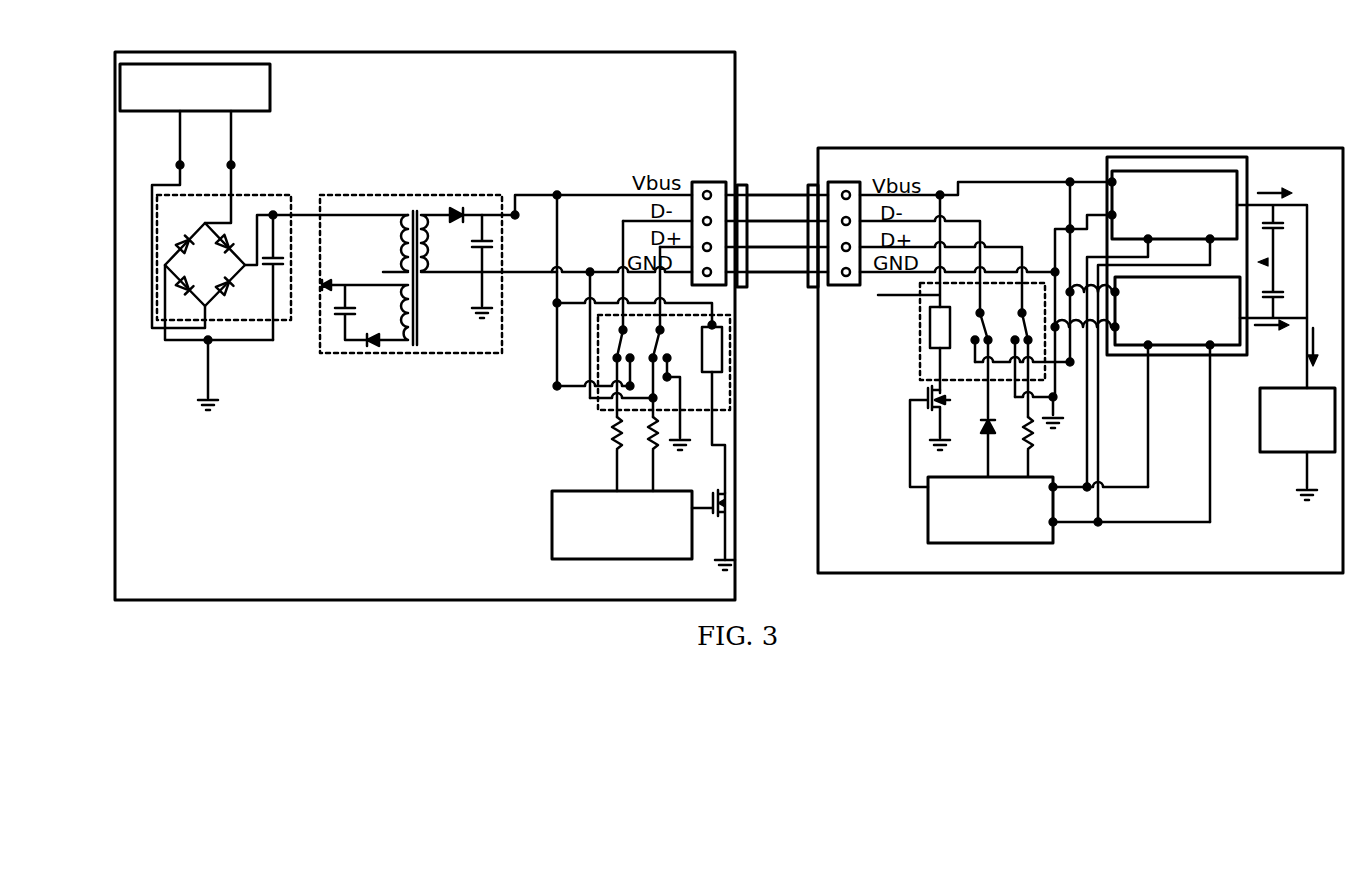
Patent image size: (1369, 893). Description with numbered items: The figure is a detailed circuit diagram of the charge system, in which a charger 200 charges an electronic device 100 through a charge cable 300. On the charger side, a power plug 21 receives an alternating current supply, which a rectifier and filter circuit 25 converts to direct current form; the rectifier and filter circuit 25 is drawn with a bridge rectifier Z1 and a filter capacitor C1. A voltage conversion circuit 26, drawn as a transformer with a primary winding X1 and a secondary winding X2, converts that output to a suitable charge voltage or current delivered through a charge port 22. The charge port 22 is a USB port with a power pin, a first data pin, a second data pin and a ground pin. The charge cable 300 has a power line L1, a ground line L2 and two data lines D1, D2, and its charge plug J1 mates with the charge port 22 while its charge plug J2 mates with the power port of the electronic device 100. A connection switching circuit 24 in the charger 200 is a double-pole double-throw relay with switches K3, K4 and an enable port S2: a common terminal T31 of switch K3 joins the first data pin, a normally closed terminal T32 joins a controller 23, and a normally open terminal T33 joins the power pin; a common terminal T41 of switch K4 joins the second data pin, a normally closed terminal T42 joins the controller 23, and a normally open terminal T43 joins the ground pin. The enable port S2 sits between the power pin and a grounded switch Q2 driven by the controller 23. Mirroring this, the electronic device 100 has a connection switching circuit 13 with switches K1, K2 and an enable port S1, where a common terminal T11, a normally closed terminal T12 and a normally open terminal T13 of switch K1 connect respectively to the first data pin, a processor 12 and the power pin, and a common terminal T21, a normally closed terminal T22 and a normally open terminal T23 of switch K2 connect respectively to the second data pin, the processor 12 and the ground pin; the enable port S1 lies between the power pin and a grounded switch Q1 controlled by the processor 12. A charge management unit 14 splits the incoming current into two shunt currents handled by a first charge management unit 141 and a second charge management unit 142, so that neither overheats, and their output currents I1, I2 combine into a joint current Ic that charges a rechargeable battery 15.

The charger 200 is at (563, 52).
The power plug 21 is at (272, 90).
The rectifier and filter circuit 25 is at (282, 288).
The voltage conversion circuit 26 is at (438, 252).
The charge port 22 is at (705, 180).
The controller 23 is at (553, 515).
The connection switching circuit 24 is at (644, 344).
The charge cable 300 is at (793, 194).
The electronic device 100 is at (955, 148).
The charge management unit 14 is at (1177, 254).
The first charge management unit 141 is at (1212, 171).
The second charge management unit 142 is at (1168, 352).
The processor 12 is at (1030, 543).
The connection switching circuit 13 is at (961, 341).
The battery 15 is at (1260, 430).
The charge plug J1 is at (743, 183).
The charge plug J2 is at (812, 185).
The data line D1 is at (793, 220).
The data line D2 is at (770, 250).
The power line L1 is at (768, 195).
The ground line L2 is at (798, 275).
The bridge rectifier Z1 is at (205, 257).
The capacitor C1 is at (261, 275).
The primary winding X1 is at (408, 230).
The secondary winding X2 is at (421, 228).
The switch K3 is at (633, 356).
The switch K4 is at (671, 369).
The enable port S2 is at (722, 352).
The grounded switch Q2 is at (713, 515).
The common terminal T31 is at (621, 332).
The normally closed terminal T32 is at (615, 358).
The normally open terminal T33 is at (628, 383).
The common terminal T41 is at (662, 333).
The normally closed terminal T42 is at (668, 360).
The normally open terminal T43 is at (668, 380).
The enable port S1 is at (930, 327).
The grounded switch Q1 is at (921, 436).
The switch K1 is at (986, 341).
The switch K2 is at (1044, 341).
The common terminal T11 is at (983, 305).
The normally closed terminal T12 is at (989, 345).
The normally open terminal T13 is at (976, 345).
The common terminal T21 is at (1026, 330).
The normally closed terminal T22 is at (1030, 345).
The normally open terminal T23 is at (1017, 345).
The output current I1 is at (1275, 184).
The output current I2 is at (1269, 337).
The joint current Ic is at (1322, 347).